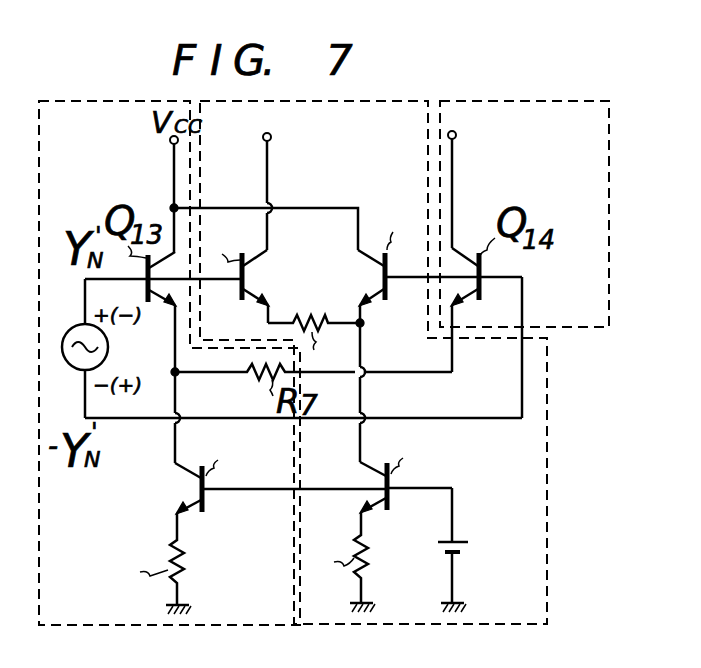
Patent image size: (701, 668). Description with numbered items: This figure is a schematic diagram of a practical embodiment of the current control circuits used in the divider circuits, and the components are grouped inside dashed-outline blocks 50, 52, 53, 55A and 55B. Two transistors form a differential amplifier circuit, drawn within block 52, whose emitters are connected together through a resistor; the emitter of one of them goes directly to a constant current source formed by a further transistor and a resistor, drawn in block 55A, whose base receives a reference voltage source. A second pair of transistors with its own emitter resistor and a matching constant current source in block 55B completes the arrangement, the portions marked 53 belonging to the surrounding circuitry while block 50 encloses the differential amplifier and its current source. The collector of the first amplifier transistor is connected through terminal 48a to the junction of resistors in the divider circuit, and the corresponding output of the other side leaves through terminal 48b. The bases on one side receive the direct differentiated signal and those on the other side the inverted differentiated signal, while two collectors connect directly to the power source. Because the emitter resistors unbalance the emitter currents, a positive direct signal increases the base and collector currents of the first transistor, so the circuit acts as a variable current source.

The part of circuit 53 is at (568, 215).
The circuit 50 is at (402, 175).
The differential amplifier 52 is at (331, 270).
The terminal 48a is at (285, 125).
The terminal 48b is at (456, 135).
The current source 55A is at (434, 563).
The current source 55B is at (162, 493).